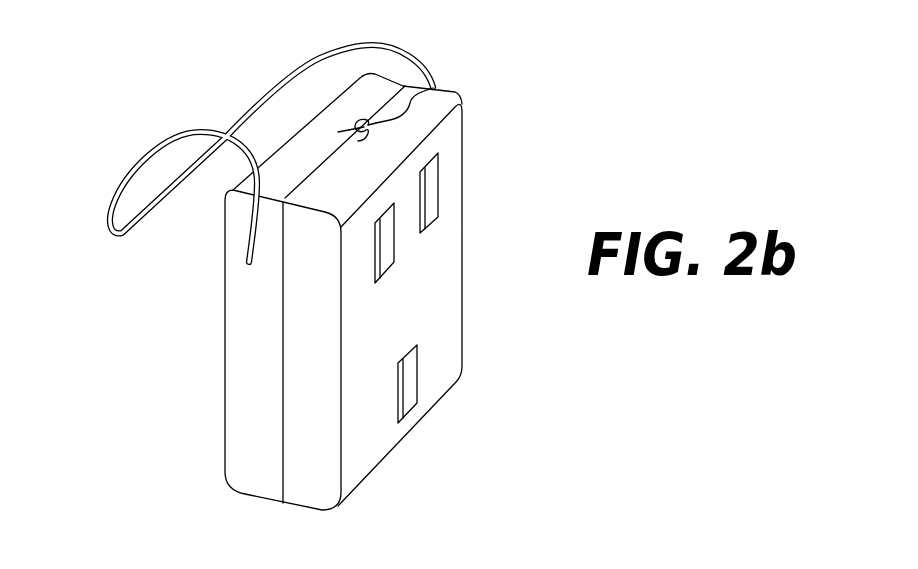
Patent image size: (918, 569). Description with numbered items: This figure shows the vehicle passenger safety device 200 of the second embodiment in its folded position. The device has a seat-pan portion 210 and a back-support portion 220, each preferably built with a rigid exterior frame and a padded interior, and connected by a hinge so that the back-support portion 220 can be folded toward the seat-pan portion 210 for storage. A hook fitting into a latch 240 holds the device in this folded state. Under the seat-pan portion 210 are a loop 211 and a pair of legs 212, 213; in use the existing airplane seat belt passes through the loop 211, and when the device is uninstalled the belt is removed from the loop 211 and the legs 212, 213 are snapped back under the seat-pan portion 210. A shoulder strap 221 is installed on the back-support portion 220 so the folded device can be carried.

The vehicle passenger safety device 200 is at (95, 119).
The seat-pan portion 210 is at (298, 490).
The loop 211 is at (418, 373).
The leg 212 is at (387, 242).
The leg 213 is at (432, 173).
The back-support portion 220 is at (281, 192).
The shoulder strap 221 is at (371, 44).
The hook and latch 240 is at (437, 88).